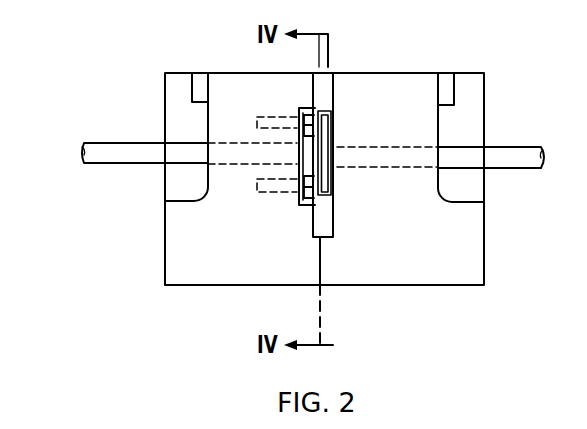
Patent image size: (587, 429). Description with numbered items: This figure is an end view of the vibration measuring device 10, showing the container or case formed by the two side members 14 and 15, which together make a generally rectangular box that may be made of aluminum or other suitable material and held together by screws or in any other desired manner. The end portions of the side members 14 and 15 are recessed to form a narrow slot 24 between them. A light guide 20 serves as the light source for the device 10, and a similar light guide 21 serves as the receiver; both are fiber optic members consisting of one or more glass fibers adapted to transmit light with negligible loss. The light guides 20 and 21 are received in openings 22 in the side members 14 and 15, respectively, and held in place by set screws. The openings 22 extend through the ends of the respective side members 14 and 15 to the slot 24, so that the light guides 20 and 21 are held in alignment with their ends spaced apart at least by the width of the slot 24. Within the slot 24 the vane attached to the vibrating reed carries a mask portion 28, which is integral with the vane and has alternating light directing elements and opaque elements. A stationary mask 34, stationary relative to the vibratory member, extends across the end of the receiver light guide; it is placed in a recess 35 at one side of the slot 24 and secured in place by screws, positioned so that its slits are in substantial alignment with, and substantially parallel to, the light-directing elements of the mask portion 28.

The vibration measuring device 10 is at (400, 58).
The side member 14 is at (217, 272).
The side member 15 is at (423, 280).
The light guide 20 is at (503, 150).
The light guide 21 is at (124, 148).
The opening 22 is at (243, 166).
The slot 24 is at (329, 222).
The mask portion 28 is at (326, 120).
The stationary mask 34 is at (298, 146).
The recess 35 is at (299, 199).